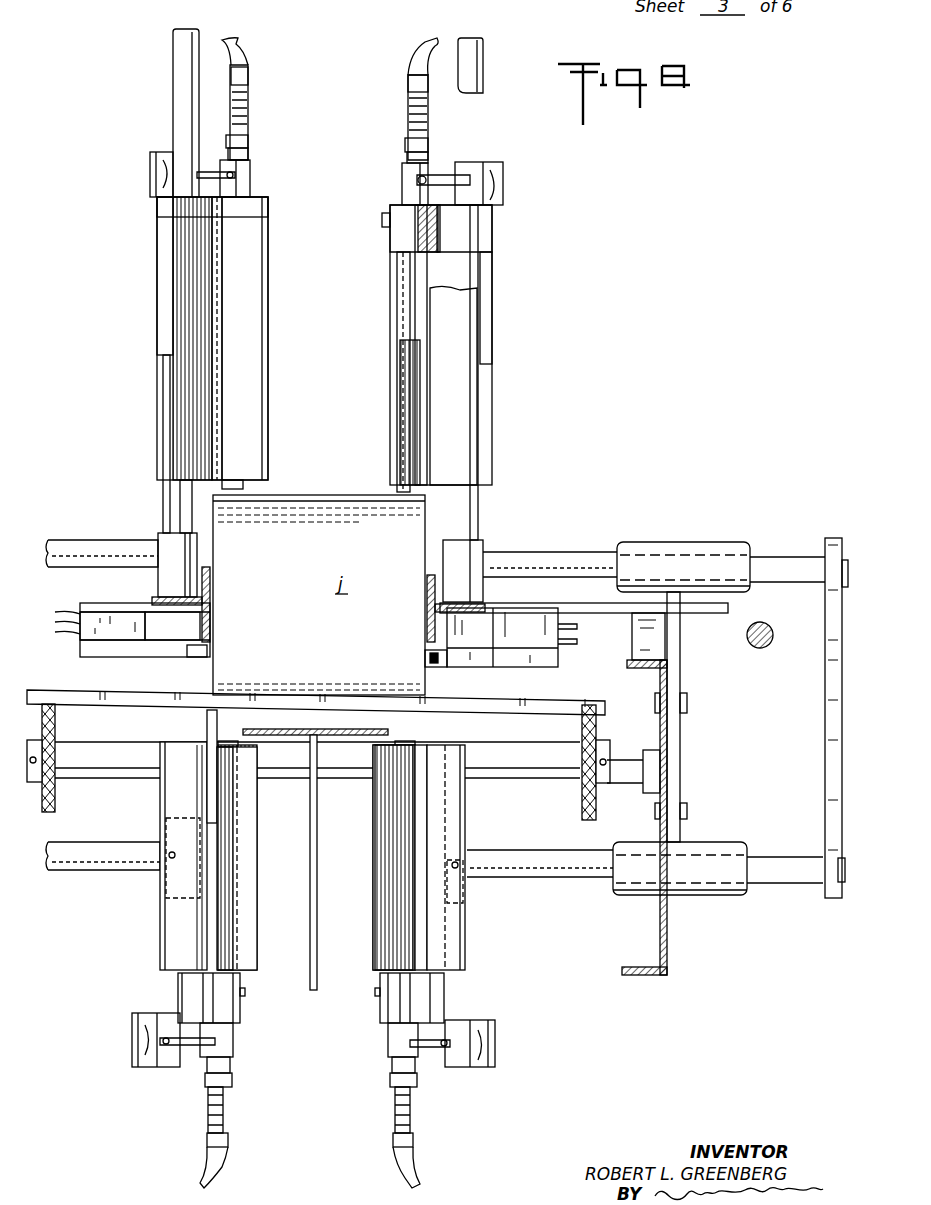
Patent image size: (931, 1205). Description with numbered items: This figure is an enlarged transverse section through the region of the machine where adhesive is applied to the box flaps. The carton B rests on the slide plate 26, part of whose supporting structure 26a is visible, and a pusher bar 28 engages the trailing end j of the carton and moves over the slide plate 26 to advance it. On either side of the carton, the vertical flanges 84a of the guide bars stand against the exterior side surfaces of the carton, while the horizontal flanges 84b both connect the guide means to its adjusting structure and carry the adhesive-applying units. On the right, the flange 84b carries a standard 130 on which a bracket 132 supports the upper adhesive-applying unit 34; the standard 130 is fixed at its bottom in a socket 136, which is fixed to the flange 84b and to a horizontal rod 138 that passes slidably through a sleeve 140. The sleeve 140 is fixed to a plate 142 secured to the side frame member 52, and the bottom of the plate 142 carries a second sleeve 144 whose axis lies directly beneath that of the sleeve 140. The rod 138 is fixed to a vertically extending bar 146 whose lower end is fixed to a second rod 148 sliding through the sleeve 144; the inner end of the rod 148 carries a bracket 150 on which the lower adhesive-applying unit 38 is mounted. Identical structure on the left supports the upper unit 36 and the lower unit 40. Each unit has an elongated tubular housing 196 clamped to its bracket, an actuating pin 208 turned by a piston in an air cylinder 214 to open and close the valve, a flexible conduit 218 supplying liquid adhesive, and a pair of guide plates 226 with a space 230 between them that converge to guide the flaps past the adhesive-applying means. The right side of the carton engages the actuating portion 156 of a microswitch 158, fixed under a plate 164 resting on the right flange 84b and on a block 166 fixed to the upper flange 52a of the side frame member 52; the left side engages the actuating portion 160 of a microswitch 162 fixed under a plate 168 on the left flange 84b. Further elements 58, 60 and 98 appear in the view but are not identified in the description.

The slide plate 26 is at (290, 735).
The supporting structure 26a is at (310, 862).
The pusher bar 28 is at (533, 688).
The adhesive-applying unit 34 is at (399, 158).
The upper adhesive-applying unit 36 is at (269, 180).
The lower adhesive-applying unit 38 is at (388, 1101).
The lower adhesive-applying unit 40 is at (245, 1083).
The side frame member 52 is at (665, 740).
The upper flange 52a is at (652, 662).
The end bracket 58 is at (50, 812).
The guide rail 60 is at (126, 772).
The vertical flange 84a is at (212, 602).
The horizontal flange 84b is at (160, 600).
The shaft 98 is at (790, 618).
The standard 130 is at (180, 80).
The bracket 132 is at (160, 302).
The socket 136 is at (175, 543).
The horizontal rod 138 is at (63, 540).
The sleeve 140 is at (700, 532).
The plate 142 is at (680, 783).
The second sleeve 144 is at (740, 832).
The vertically extending bar 146 is at (830, 718).
The second rod 148 is at (107, 862).
The bracket 150 is at (182, 992).
The actuating portion 156 is at (435, 660).
The microswitch 158 is at (528, 627).
The actuating portion 160 is at (196, 655).
The microswitch 162 is at (98, 630).
The plate 164 is at (585, 607).
The block 166 is at (640, 633).
The plate 168 is at (95, 605).
The elongated tubular housing 196 is at (252, 192).
The actuating pin 208 is at (204, 172).
The air cylinder 214 is at (150, 172).
The conduit 218 is at (240, 58).
The guide plates 226 is at (185, 425).
The space 230 is at (214, 460).